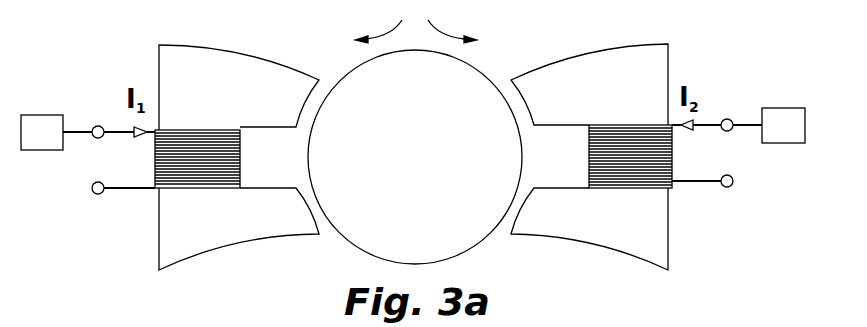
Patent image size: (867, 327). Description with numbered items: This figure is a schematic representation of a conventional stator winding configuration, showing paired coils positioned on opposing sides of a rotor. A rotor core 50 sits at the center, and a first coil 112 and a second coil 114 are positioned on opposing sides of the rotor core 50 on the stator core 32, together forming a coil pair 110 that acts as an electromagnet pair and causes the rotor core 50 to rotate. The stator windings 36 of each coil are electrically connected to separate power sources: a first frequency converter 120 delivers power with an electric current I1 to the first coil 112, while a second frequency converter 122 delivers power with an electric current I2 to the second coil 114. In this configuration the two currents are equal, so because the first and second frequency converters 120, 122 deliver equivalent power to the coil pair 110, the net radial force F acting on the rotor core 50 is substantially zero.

The stator core 32 is at (172, 61).
The first coil 112 is at (212, 147).
The second coil 114 is at (634, 73).
The first stator end winding 36 is at (155, 162).
The first frequency converter 120 is at (30, 141).
The second frequency converter 122 is at (772, 134).
The rotor core 50 is at (403, 193).
The coil pair 110 is at (416, 22).